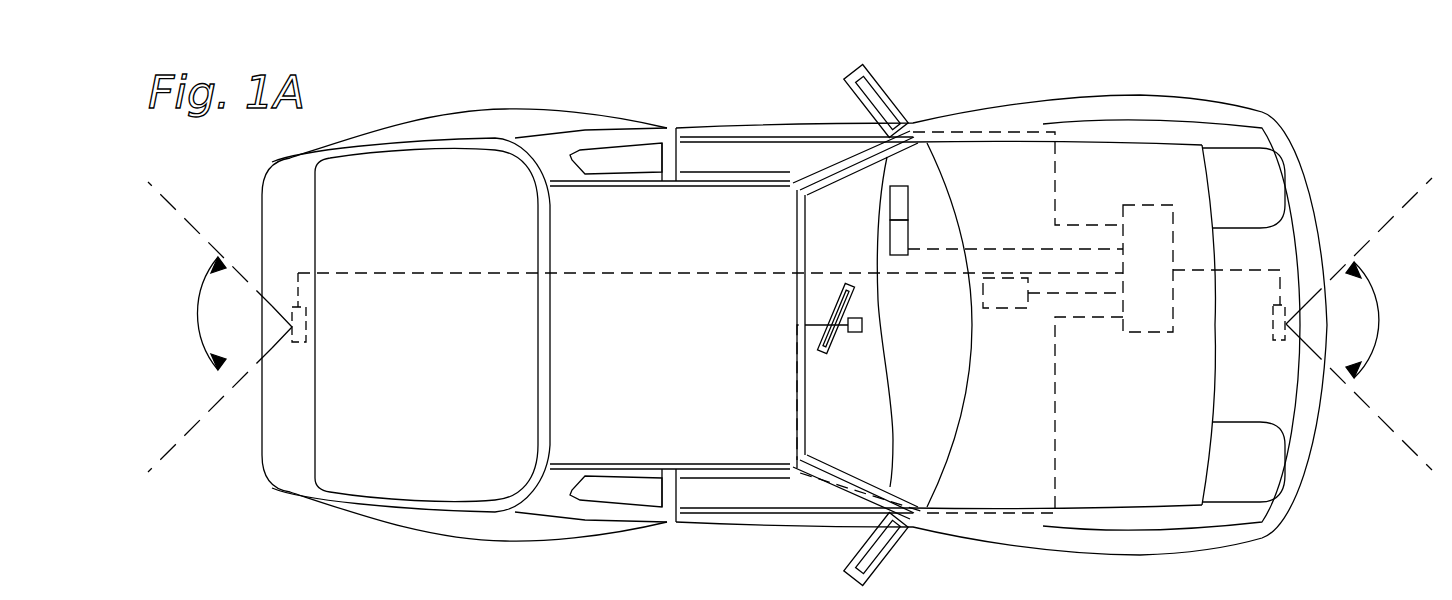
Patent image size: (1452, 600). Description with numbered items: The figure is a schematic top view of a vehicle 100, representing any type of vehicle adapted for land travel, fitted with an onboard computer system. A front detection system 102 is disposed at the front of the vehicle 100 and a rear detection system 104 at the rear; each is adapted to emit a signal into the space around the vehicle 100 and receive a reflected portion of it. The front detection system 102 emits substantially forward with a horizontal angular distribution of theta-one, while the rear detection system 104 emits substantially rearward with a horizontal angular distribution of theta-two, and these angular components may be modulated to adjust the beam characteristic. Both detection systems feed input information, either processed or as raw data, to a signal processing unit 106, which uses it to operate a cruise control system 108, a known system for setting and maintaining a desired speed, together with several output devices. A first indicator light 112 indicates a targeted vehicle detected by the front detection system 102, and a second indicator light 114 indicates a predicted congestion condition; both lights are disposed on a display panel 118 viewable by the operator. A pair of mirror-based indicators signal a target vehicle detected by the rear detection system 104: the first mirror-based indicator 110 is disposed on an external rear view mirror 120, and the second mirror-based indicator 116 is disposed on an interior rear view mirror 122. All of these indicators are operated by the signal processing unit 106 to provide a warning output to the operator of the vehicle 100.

The vehicle 100 is at (1160, 580).
The front detection system 102 is at (1270, 342).
The rear detection system 104 is at (297, 344).
The signal processing unit 106 is at (1140, 335).
The cruise control system 108 is at (997, 312).
The first mirror-based indicator 110 is at (860, 96).
The first indicator light 112 is at (893, 201).
The second indicator light 114 is at (893, 237).
The second mirror-based indicator 116 is at (828, 324).
The display panel 118 is at (908, 232).
The external rear view mirror 120 is at (878, 82).
The interior rear view mirror 122 is at (835, 348).